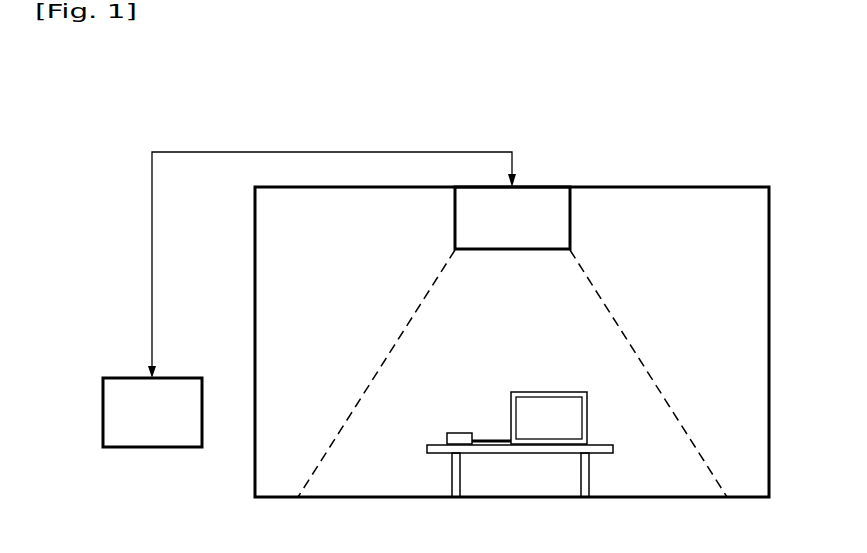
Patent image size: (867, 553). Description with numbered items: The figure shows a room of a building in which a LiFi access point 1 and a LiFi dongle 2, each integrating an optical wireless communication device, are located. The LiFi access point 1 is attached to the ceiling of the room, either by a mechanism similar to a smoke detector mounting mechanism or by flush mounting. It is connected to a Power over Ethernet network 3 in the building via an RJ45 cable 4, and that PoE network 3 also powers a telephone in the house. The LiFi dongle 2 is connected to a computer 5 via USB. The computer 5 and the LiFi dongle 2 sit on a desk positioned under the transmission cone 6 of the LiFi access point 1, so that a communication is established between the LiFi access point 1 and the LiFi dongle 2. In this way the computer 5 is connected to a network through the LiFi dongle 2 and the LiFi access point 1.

The LiFi access point 1 is at (512, 218).
The LiFi dongle 2 is at (463, 433).
The PoE network 3 is at (152, 412).
The RJ45 cable 4 is at (152, 290).
The computer 5 is at (553, 405).
The transmission cone 6 is at (638, 353).